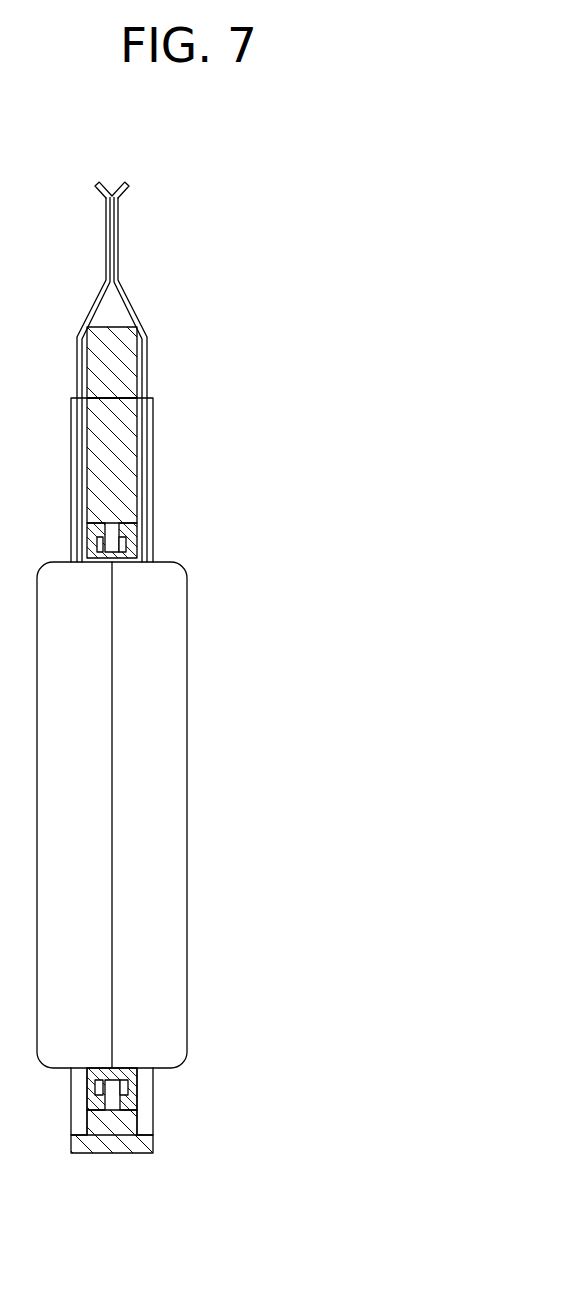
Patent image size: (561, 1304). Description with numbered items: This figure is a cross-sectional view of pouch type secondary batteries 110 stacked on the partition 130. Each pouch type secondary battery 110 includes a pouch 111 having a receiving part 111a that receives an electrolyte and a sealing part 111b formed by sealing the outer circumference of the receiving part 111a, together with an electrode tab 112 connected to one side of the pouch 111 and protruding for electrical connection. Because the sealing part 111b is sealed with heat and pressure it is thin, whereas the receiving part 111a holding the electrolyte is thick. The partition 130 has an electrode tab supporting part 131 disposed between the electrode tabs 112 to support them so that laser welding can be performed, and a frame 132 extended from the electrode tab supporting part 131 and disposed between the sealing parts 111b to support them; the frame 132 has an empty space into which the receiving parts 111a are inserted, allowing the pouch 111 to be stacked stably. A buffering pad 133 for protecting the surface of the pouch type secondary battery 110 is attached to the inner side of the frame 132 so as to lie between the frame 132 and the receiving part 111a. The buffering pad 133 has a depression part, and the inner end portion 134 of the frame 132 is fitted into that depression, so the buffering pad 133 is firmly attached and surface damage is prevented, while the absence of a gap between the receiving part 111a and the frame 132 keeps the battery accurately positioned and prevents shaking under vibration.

The pouch type secondary battery 110 is at (205, 733).
The pouch 111 is at (287, 947).
The receiving part 111a is at (170, 953).
The sealing part 111b is at (150, 552).
The electrode tab 112 is at (118, 250).
The partition 130 is at (267, 360).
The electrode tab supporting part 131 is at (128, 354).
The frame 132 is at (127, 440).
The buffering pad 133 is at (130, 533).
The inner end portion 134 is at (108, 534).